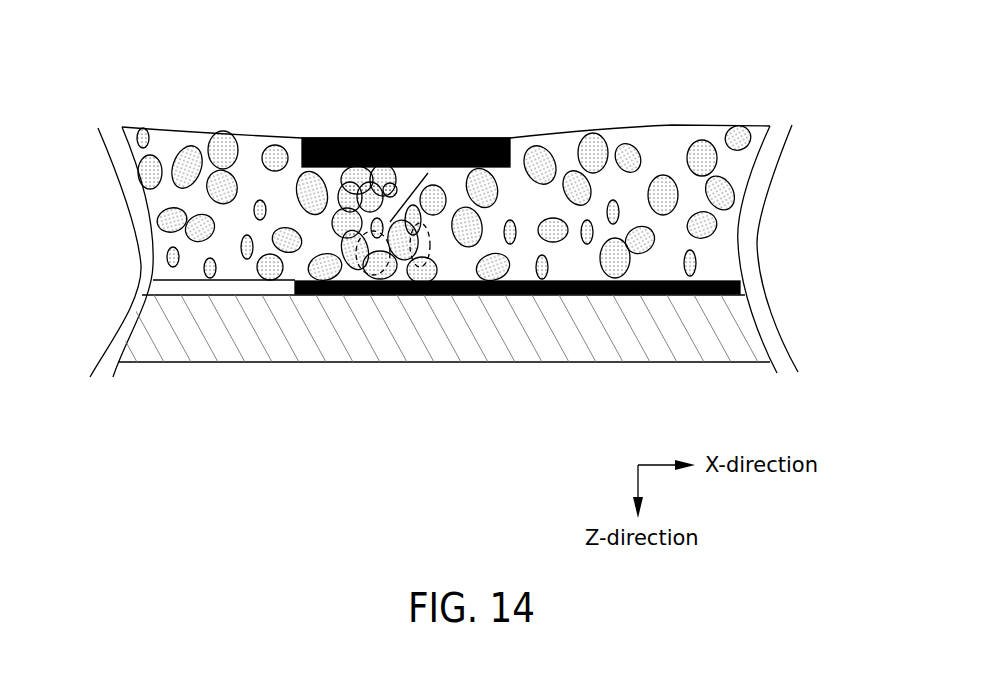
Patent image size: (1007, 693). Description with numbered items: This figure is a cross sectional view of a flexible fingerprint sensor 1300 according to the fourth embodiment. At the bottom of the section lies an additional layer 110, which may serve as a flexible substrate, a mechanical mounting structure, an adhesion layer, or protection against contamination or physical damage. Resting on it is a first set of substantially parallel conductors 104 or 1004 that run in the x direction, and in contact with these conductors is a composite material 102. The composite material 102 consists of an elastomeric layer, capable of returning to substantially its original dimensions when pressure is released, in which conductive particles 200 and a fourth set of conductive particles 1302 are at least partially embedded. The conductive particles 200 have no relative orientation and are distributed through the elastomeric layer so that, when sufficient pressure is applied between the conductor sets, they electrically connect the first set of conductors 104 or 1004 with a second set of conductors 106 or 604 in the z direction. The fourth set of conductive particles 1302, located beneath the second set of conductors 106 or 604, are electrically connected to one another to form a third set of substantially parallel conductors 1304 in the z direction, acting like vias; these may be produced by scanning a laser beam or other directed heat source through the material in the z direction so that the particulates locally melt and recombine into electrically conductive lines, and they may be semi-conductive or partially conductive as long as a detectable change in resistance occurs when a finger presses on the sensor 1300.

The flexible fingerprint sensor 1300 is at (738, 46).
The composite material 102 is at (740, 162).
The conductive particles 200 is at (730, 200).
The second set of substantially parallel conductors 106 is at (400, 93).
The second set of substantially parallel conductors 604 is at (400, 93).
The fourth set of conductive particles 1302 is at (440, 138).
The third set of substantially parallel conductors 1304 is at (426, 228).
The first set of substantially parallel conductors 104 is at (602, 288).
The first set of substantially parallel conductors 1004 is at (742, 283).
The additional layer 110 is at (147, 335).